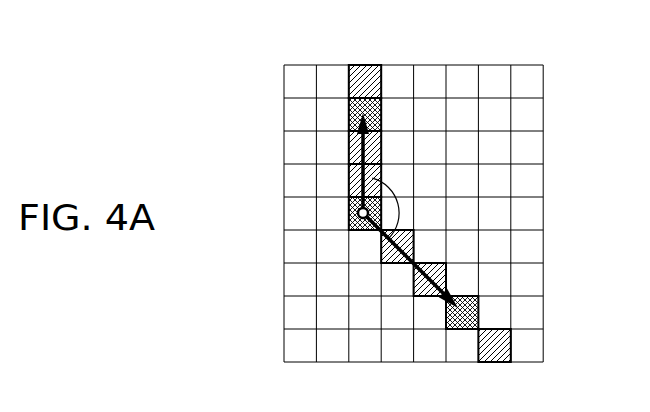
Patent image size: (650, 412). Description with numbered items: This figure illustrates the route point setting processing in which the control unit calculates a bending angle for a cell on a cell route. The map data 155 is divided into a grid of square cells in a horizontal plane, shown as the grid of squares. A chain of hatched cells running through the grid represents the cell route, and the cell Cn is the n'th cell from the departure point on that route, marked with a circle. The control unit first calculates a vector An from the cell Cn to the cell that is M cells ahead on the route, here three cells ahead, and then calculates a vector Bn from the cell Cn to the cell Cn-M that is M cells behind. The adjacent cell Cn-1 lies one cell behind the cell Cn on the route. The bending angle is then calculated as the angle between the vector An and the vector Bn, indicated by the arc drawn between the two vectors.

The map data 155 is at (543, 117).
The cell Cn is at (348, 220).
The cell Cn-1 is at (380, 252).
The cell Cn-M is at (462, 323).
The vector An is at (382, 133).
The vector Bn is at (444, 284).